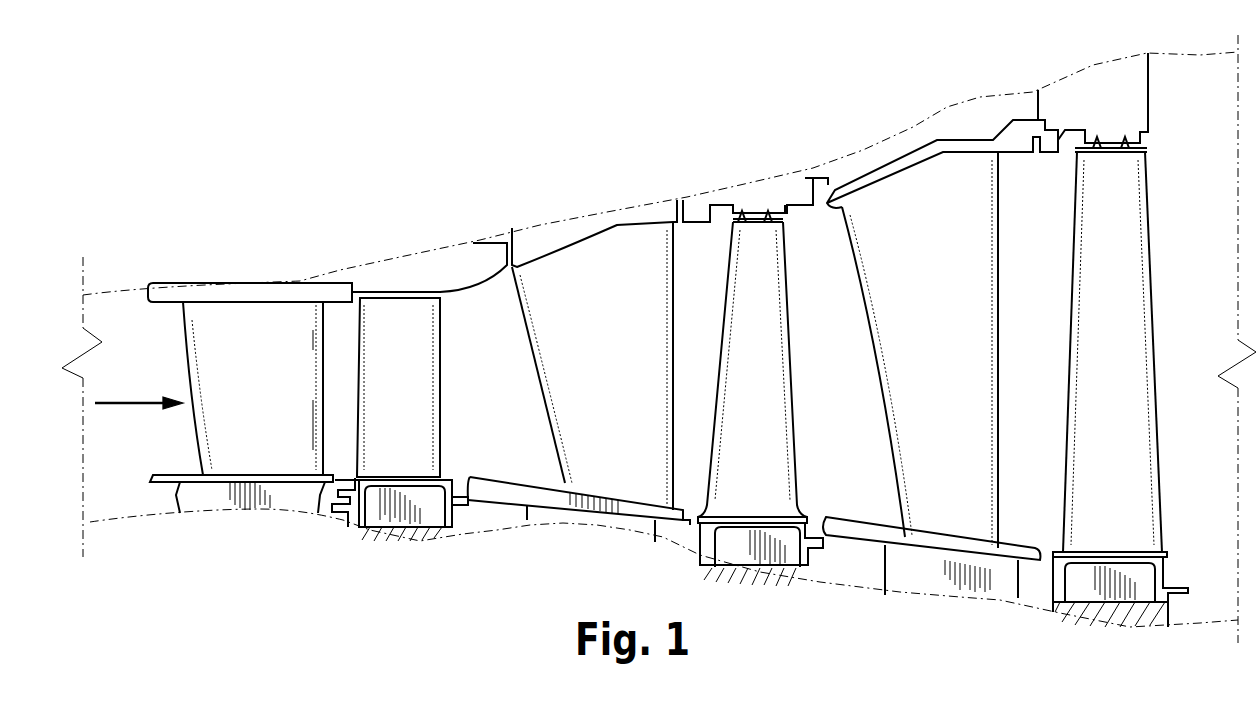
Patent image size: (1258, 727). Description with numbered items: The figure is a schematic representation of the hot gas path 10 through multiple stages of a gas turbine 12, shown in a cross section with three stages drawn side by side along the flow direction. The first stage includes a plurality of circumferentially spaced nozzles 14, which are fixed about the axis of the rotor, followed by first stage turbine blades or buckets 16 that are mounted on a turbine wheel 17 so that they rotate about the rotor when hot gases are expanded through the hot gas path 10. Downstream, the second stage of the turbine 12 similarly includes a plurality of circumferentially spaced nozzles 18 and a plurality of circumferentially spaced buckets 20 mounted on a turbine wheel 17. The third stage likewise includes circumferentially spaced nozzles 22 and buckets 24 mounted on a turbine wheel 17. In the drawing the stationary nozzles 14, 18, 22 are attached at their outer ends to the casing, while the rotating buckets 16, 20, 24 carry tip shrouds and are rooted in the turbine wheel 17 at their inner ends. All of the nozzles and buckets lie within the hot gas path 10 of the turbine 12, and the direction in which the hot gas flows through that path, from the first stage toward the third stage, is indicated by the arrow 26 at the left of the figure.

The hot gas path 10 is at (659, 355).
The gas turbine 12 is at (602, 227).
The first stage nozzles 14 is at (238, 396).
The first stage buckets 16 is at (410, 432).
The turbine wheel 17 is at (407, 533).
The second stage nozzles 18 is at (586, 368).
The second stage buckets 20 is at (768, 377).
The third stage nozzles 22 is at (916, 368).
The third stage buckets 24 is at (1130, 400).
The arrow 26 is at (133, 403).